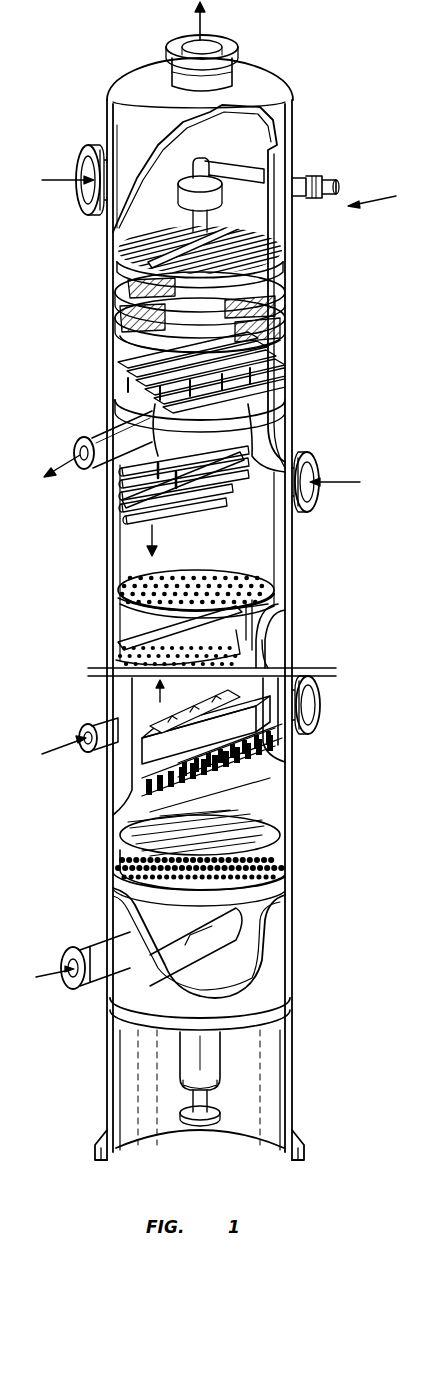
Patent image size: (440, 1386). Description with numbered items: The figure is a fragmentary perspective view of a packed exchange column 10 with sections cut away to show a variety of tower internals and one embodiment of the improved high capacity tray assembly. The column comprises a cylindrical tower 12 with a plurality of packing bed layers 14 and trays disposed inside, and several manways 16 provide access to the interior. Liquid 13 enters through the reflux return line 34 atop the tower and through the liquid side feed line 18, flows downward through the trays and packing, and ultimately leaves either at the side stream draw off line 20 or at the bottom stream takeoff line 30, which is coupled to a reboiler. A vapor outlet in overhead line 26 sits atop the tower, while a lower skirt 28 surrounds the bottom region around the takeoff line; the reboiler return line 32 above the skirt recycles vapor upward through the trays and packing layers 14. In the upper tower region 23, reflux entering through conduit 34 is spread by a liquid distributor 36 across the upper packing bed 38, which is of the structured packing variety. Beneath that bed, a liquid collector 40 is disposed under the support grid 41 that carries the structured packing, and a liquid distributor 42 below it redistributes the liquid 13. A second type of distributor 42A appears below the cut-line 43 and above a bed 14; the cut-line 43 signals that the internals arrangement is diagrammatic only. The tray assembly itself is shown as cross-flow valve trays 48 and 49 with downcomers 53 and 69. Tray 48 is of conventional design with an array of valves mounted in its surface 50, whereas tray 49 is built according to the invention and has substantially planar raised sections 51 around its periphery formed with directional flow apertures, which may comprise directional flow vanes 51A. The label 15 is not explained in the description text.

The exchange column 10 is at (308, 72).
The cylindrical tower 12 is at (291, 160).
The liquid 13 is at (158, 542).
The packing bed layers 14 is at (280, 866).
The flow direction arrows 15 is at (48, 972).
The manways 16 is at (316, 708).
The liquid side feed line 18 is at (108, 750).
The side stream draw off line 20 is at (100, 440).
The upper tower region 23 is at (120, 312).
The overhead line 26 is at (236, 48).
The lower skirt 28 is at (270, 1090).
The bottom stream takeoff line 30 is at (204, 1060).
The reboiler return line 32 is at (104, 946).
The reflux return line 34 is at (318, 178).
The liquid distributor 36 is at (240, 446).
The upper packing bed 38 is at (118, 272).
The liquid collector 40 is at (272, 376).
The support grid 41 is at (288, 334).
The liquid distributor 42 is at (124, 518).
The second type of distributor 42A is at (284, 786).
The cut-line 43 is at (328, 672).
The cross-flow valve tray 48 is at (268, 586).
The valve tray 49 is at (118, 660).
The surface 50 is at (126, 598).
The raised sections 51 is at (284, 614).
The directional flow vanes 51A is at (290, 636).
The downcomer 53 is at (276, 603).
The downcomer 69 is at (128, 640).